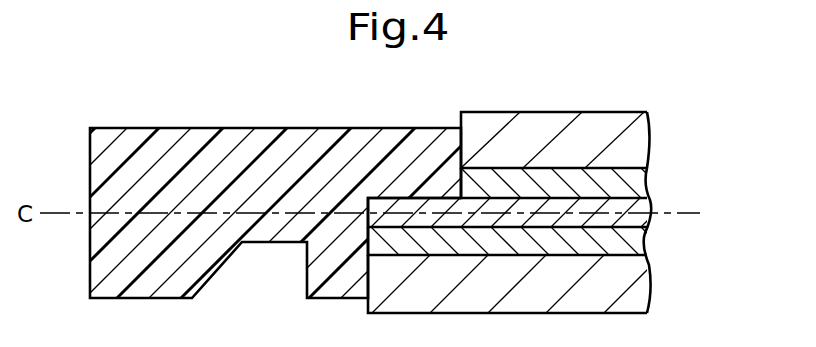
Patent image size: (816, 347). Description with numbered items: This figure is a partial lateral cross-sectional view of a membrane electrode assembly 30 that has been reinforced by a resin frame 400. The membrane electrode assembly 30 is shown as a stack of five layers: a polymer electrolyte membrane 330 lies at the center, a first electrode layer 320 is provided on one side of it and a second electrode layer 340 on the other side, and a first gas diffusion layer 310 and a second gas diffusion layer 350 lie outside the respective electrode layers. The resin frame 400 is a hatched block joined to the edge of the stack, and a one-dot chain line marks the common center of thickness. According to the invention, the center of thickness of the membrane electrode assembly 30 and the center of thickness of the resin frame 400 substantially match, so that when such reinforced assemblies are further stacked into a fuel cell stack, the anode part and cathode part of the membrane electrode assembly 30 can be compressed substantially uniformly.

The resin frame 400 is at (262, 146).
The membrane electrode assembly 30 is at (583, 212).
The first gas diffusion layer 310 is at (637, 143).
The first electrode layer 320 is at (637, 182).
The polymer electrolyte membrane 330 is at (638, 213).
The second electrode layer 340 is at (638, 243).
The second gas diffusion layer 350 is at (556, 284).